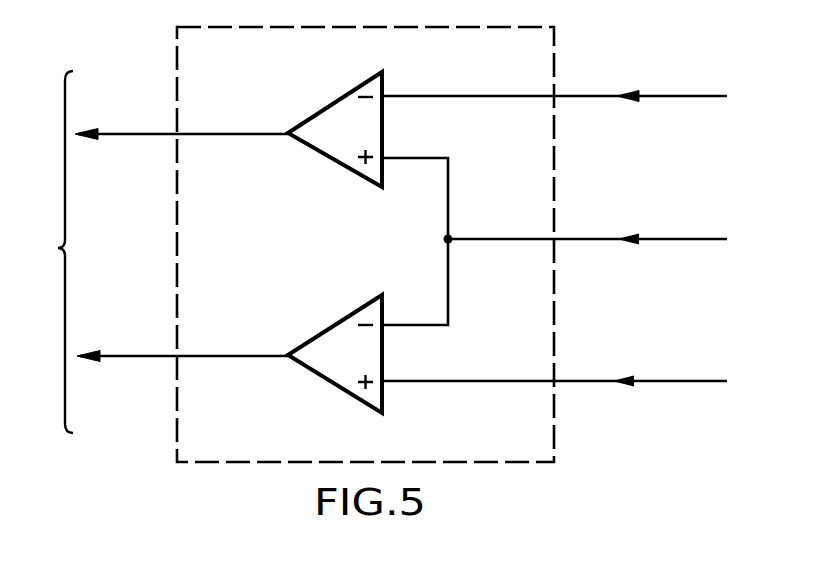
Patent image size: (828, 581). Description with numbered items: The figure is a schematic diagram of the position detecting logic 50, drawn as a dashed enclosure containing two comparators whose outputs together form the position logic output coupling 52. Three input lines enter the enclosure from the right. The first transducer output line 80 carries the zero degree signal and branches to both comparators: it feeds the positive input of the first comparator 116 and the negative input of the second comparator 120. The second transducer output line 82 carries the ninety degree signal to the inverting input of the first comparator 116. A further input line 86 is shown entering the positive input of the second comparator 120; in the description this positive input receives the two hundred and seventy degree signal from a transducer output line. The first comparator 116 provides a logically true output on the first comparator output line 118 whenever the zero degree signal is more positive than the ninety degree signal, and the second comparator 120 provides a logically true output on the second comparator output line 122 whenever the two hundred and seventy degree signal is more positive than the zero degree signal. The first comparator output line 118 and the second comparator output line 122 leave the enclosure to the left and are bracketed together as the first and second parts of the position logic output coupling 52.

The position detecting logic 50 is at (175, 420).
The position logic output coupling 52 is at (49, 252).
The first transducer output line 80 is at (705, 237).
The second transducer output line 82 is at (705, 93).
The second input line 86 is at (708, 379).
The first comparator 116 is at (308, 118).
The first comparator output line 118 is at (215, 131).
The second comparator 120 is at (308, 350).
The second comparator output line 122 is at (212, 353).